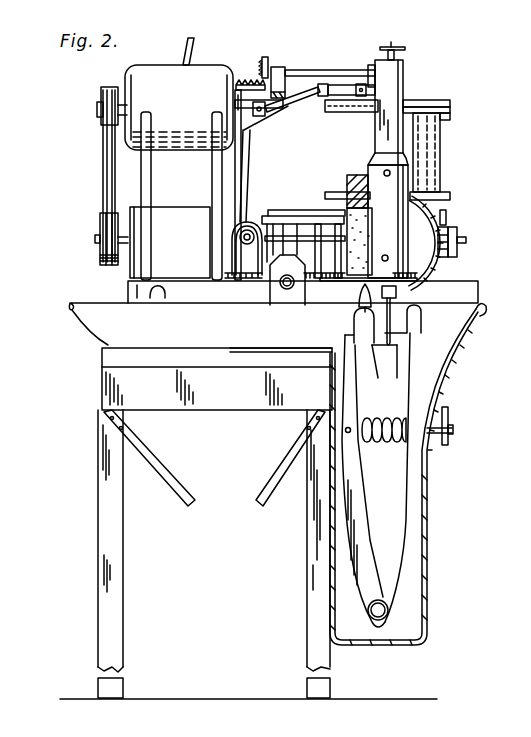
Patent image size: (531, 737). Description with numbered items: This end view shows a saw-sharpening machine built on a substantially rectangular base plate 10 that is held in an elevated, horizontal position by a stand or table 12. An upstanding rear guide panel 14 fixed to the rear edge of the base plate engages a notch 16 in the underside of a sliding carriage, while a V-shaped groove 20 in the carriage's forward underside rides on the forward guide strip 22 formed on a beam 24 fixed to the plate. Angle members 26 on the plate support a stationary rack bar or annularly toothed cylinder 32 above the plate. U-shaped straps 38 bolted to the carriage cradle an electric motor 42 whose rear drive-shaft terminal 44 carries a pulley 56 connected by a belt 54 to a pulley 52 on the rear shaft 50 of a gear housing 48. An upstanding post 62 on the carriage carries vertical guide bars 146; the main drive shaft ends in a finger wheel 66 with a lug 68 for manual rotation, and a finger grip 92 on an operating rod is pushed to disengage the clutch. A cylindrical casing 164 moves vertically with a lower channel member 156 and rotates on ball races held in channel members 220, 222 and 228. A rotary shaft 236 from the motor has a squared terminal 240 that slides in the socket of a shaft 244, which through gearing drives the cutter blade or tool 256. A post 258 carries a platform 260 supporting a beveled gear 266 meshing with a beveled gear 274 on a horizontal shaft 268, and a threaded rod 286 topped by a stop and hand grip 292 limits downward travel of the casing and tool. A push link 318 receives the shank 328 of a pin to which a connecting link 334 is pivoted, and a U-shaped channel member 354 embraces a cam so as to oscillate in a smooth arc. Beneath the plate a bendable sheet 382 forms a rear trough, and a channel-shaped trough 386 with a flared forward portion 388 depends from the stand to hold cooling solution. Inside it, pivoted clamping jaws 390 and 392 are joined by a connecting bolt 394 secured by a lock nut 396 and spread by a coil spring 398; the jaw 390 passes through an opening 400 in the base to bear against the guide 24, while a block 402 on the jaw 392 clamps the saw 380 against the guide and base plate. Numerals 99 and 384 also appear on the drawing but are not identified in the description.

The base plate 10 is at (333, 340).
The stand or table 12 is at (112, 567).
The rear guide panel 14 is at (138, 292).
The longitudinal recess or notch 16 is at (150, 292).
The V-shaped groove or recess 20 is at (357, 292).
The forward guide strip 22 is at (358, 302).
The longitudinal strip or beam 24 is at (368, 346).
The angle members 26 is at (277, 295).
The stationary rack bar or annularly toothed cylinder 32 is at (355, 298).
The U-shaped frames or straps 38 is at (148, 168).
The electric motor 42 is at (203, 70).
The rear terminal of motor drive shaft 44 is at (98, 108).
The gear housing 48 is at (191, 217).
The rear shaft 50 is at (96, 243).
The pulley 52 is at (100, 262).
The belt or belts 54 is at (103, 168).
The pulley 56 is at (102, 93).
The post 62 is at (396, 220).
The finger grip or wheel 66 is at (458, 251).
The projecting lug 68 is at (467, 240).
The finger grip 92 is at (450, 257).
The pin 99 is at (447, 219).
The guide bars 146 is at (390, 88).
The lower annular channel shaped member 156 is at (446, 197).
The cylindrical casing or support 164 is at (428, 157).
The upper annular channel member 220 is at (445, 103).
The annular channel member 222 is at (452, 110).
The annular channel member 228 is at (446, 118).
The rotary shaft 236 is at (271, 118).
The squared terminal 240 is at (290, 108).
The shaft 244 is at (320, 98).
The cutter blade, abrading wheel or tool 256 is at (422, 262).
The supporting post 258 is at (237, 142).
The platform 260 is at (240, 100).
The beveled gear 266 is at (237, 80).
The horizontal shaft 268 is at (310, 70).
The beveled gear 274 is at (267, 58).
The externally threaded rod 286 is at (368, 56).
The stop and hand grip 292 is at (396, 47).
The push link 318 is at (303, 222).
The shank portion 328 is at (331, 190).
The connecting link 334 is at (356, 198).
The U-shaped channel member 354 is at (312, 210).
The saw 380 is at (389, 339).
The bendable sheet of metallic material 382 is at (306, 352).
The lip 384 is at (90, 320).
The channel shaped trough 386 is at (396, 645).
The outer forward portion 388 is at (446, 348).
The clamping jaw 390 is at (346, 500).
The clamping jaw 392 is at (406, 516).
The connecting bolt 394 is at (380, 443).
The lock nut 396 is at (445, 446).
The coil spring 398 is at (394, 418).
The opening 400 is at (345, 320).
The block 402 is at (400, 333).